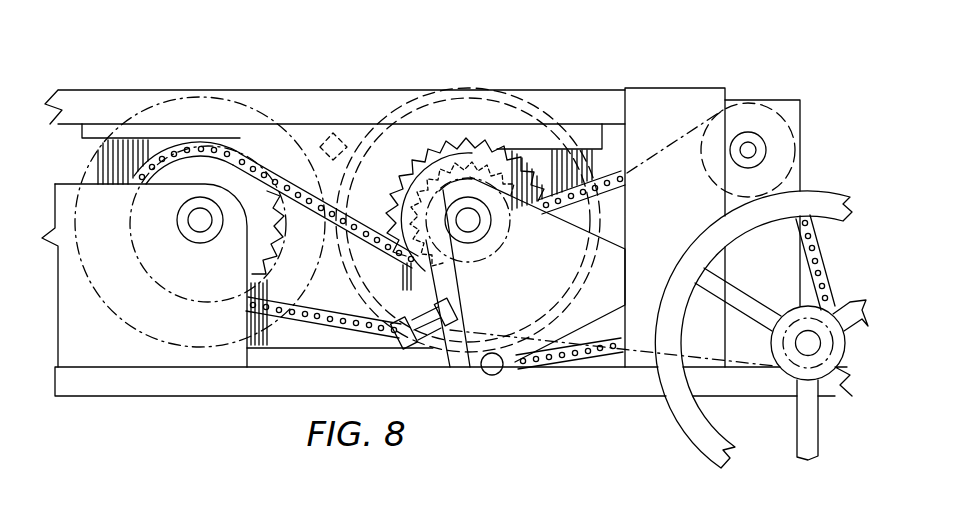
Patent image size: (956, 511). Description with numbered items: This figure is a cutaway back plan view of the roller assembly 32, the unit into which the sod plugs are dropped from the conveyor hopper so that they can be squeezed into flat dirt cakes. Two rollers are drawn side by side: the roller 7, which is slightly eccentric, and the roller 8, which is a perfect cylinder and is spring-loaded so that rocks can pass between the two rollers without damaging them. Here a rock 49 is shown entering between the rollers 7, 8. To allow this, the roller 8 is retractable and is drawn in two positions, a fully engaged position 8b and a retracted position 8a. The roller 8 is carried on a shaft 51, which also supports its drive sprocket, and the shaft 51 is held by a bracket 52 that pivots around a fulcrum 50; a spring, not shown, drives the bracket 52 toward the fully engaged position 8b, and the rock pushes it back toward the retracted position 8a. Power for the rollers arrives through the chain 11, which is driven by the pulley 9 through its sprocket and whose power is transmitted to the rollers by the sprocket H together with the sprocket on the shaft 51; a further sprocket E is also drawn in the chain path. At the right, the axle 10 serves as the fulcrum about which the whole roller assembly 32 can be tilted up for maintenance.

The roller 7 is at (107, 163).
The roller 8 is at (496, 90).
The retracted position 8a is at (567, 110).
The fully engaged position 8b is at (378, 122).
The pulley 9 is at (829, 200).
The axle 10 is at (801, 318).
The chain 11 is at (222, 144).
The roller assembly 32 is at (662, 118).
The rock 49 is at (323, 132).
The fulcrum 50 is at (492, 375).
The shaft 51 is at (456, 216).
The bracket 52 is at (566, 297).
The idler sprocket E is at (758, 122).
The sprocket H is at (249, 229).